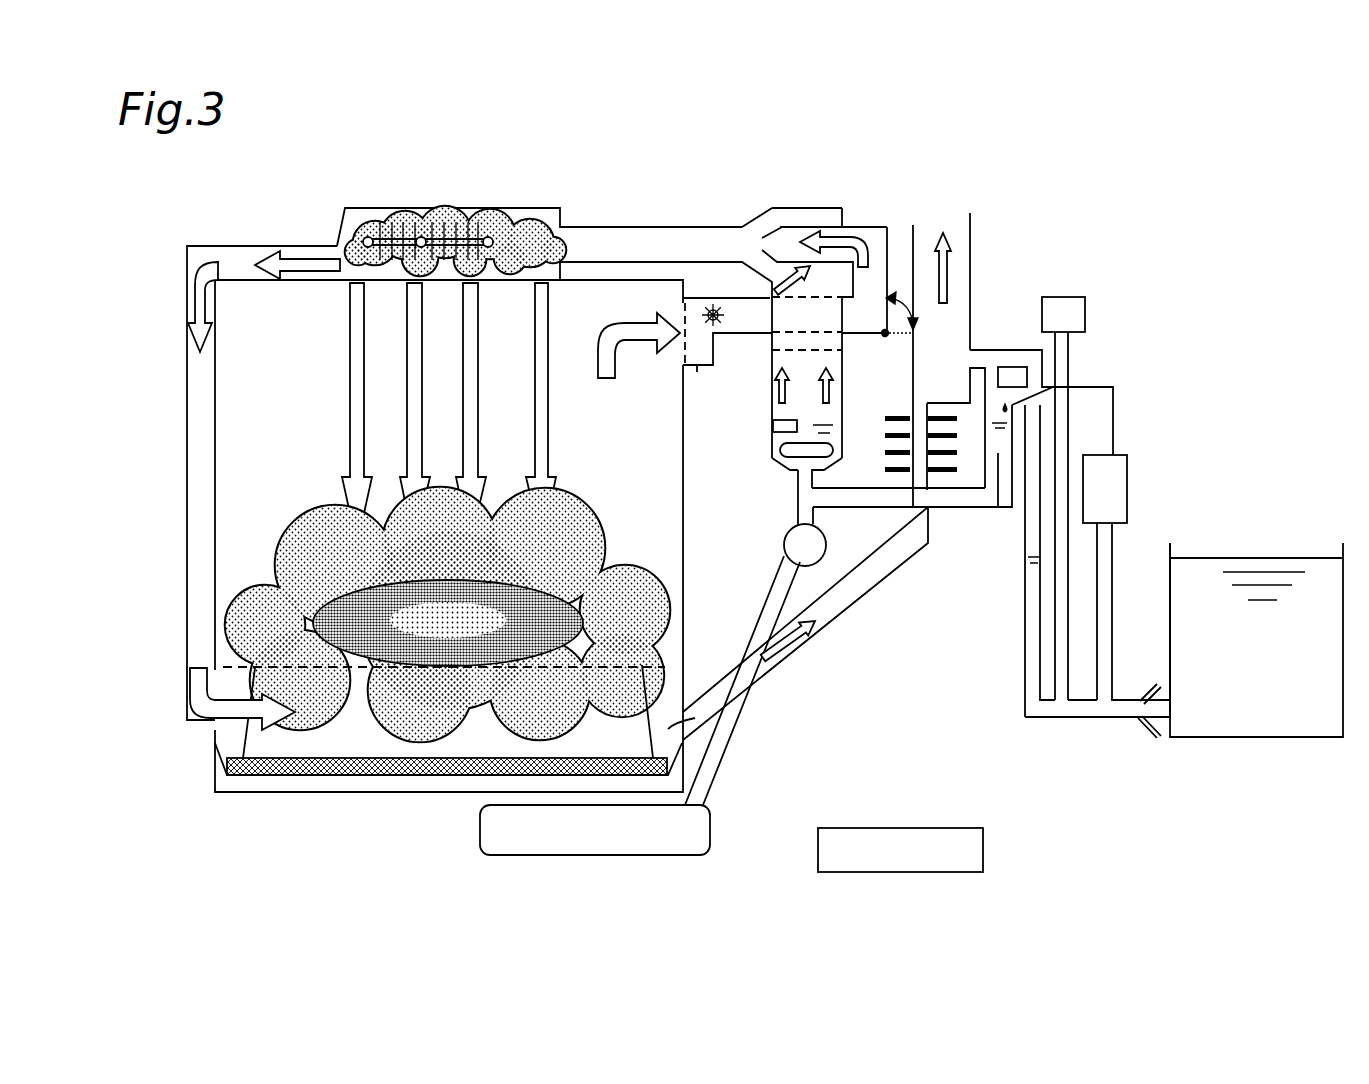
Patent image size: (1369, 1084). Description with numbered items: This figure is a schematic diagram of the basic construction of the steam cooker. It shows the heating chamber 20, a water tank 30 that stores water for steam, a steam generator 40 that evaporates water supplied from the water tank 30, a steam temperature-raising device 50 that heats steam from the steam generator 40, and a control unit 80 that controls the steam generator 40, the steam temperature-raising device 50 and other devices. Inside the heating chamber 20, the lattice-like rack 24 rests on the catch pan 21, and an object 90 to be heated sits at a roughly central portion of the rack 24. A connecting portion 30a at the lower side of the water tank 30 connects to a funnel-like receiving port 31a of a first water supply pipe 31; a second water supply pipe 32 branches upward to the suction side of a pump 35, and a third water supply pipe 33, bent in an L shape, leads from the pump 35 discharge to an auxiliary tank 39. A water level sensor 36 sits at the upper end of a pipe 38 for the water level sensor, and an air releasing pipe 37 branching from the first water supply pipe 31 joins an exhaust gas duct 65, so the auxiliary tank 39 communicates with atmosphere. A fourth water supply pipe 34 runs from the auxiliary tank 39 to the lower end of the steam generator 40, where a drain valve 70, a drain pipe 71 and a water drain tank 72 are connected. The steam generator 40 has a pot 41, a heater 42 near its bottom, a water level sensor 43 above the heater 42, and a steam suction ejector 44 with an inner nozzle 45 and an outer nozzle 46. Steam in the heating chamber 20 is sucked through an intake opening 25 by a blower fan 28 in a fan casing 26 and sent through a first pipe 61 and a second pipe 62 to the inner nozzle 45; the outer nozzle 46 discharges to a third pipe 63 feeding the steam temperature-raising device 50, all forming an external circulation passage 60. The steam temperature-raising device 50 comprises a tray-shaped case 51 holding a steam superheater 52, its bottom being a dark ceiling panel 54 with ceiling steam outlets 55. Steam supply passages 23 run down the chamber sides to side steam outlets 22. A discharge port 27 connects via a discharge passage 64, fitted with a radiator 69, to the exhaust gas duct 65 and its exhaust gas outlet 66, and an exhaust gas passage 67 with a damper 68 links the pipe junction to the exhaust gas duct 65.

The heating chamber 20 is at (247, 432).
The catch pan 21 is at (305, 775).
The side steam outlets 22 is at (217, 683).
The steam supply passages 23 is at (255, 246).
The lattice-like rack 24 is at (362, 774).
The intake opening 25 is at (683, 345).
The fan casing 26 is at (680, 380).
The discharge port 27 is at (690, 722).
The blower fan 28 is at (715, 312).
The water tank 30 is at (1248, 738).
The connecting portion 30a is at (1158, 745).
The first water supply pipe 31 is at (1048, 718).
The receiving port 31a is at (1148, 745).
The second water supply pipe 32 is at (1113, 560).
The third water supply pipe 33 is at (1114, 425).
The fourth water supply pipe 34 is at (948, 510).
The pump 35 is at (1128, 488).
The water level sensor 36 is at (1086, 313).
The air releasing pipe 37 is at (1025, 650).
The pipe for the water level sensor 38 is at (1090, 380).
The auxiliary tank 39 is at (1005, 500).
The steam generator 40 is at (836, 188).
The pot 41 is at (769, 400).
The heater 42 is at (795, 457).
The water level sensor 43 is at (773, 430).
The steam suction ejector 44 is at (740, 204).
The inner nozzle 45 is at (797, 230).
The outer nozzle 46 is at (768, 206).
The steam temperature-raising device 50 is at (358, 198).
The tray-shaped case 51 is at (486, 212).
The steam superheater 52 is at (450, 237).
The ceiling panel 54 is at (435, 284).
The ceiling steam outlets 55 is at (367, 284).
The external circulation passage 60 is at (860, 210).
The first pipe 61 is at (748, 336).
The second pipe 62 is at (887, 270).
The third pipe 63 is at (632, 225).
The discharge passage 64 is at (841, 616).
The exhaust gas duct 65 is at (970, 292).
The exhaust gas outlet 66 is at (958, 235).
The exhaust gas passage 67 is at (897, 338).
The damper 68 is at (880, 336).
The radiator 69 is at (882, 440).
The drain valve 70 is at (784, 546).
The drain pipe 71 is at (726, 750).
The water drain tank 72 is at (622, 856).
The control unit 80 is at (900, 872).
The object to be heated 90 is at (337, 607).